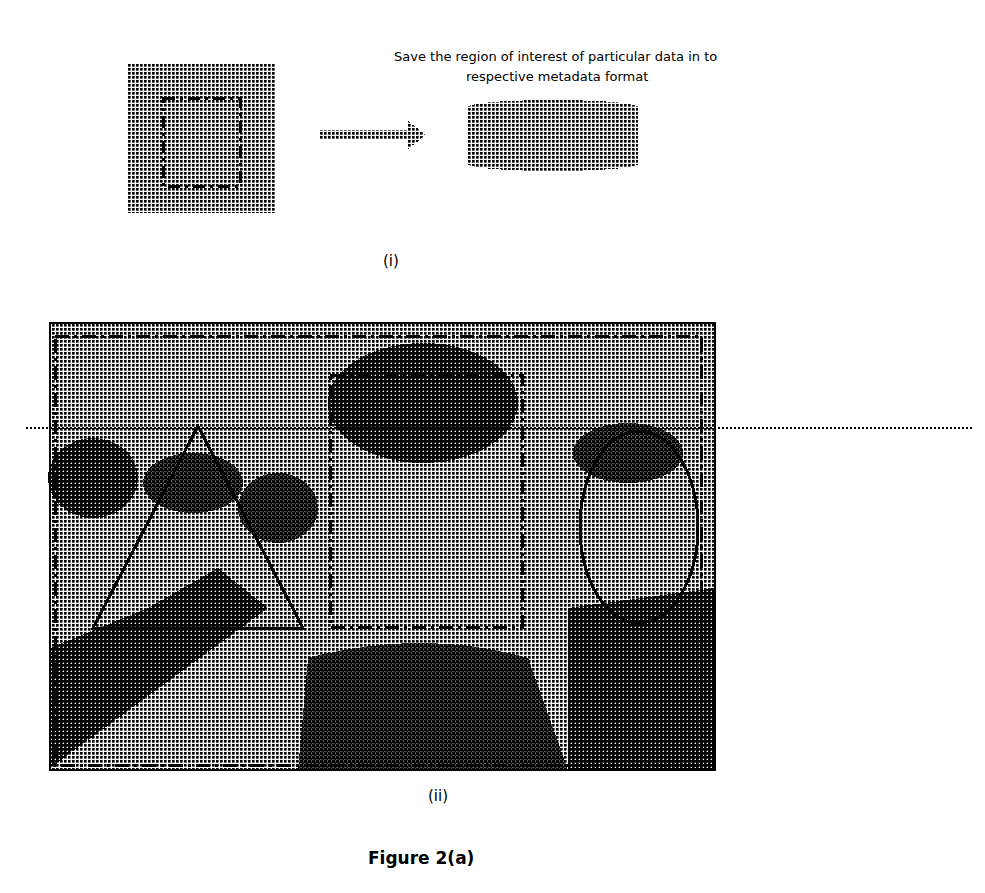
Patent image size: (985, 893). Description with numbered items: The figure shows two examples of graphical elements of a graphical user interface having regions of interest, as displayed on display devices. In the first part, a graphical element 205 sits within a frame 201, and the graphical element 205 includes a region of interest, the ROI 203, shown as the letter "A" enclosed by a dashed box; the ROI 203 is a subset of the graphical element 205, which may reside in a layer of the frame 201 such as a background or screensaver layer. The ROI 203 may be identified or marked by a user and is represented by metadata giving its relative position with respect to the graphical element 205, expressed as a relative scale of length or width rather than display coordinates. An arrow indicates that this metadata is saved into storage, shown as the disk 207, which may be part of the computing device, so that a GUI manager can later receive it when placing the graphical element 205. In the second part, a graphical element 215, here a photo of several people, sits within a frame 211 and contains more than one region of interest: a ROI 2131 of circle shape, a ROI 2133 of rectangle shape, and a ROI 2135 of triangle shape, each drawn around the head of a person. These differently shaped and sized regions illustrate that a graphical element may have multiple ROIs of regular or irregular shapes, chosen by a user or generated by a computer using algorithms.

The frame 201 is at (263, 60).
The region of interest (ROI) 203 is at (210, 123).
The graphical element 205 is at (227, 175).
The disk 207 is at (553, 135).
The frame 211 is at (705, 478).
The graphical element 215 is at (700, 497).
The ROI 2131 is at (686, 575).
The ROI 2133 is at (510, 619).
The ROI 2135 is at (283, 622).